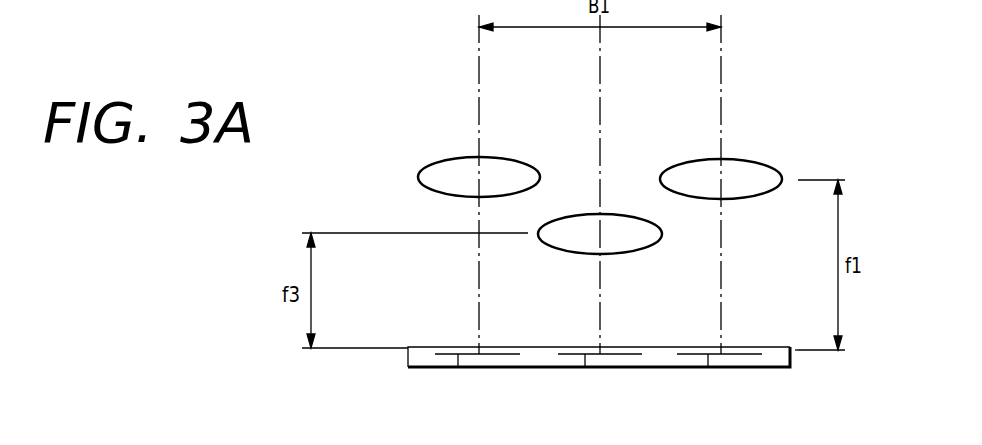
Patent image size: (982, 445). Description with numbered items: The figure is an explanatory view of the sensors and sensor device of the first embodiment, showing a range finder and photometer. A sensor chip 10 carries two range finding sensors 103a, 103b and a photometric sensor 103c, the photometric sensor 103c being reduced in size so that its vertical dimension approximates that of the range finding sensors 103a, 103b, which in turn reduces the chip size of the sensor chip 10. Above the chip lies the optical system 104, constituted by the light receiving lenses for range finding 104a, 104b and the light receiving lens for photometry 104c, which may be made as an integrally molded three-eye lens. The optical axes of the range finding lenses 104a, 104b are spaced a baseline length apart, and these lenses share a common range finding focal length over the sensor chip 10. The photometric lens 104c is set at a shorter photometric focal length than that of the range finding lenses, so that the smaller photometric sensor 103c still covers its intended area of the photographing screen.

The optical system 104 is at (375, 106).
The light receiving lens for range finding 104a is at (736, 160).
The light receiving lens for range finding 104b is at (494, 158).
The light receiving lens for photometry 104c is at (571, 254).
The sensor chip 10 is at (432, 222).
The range finding sensor 103a is at (708, 368).
The range finding sensor 103b is at (458, 368).
The photometric sensor 103c is at (585, 368).